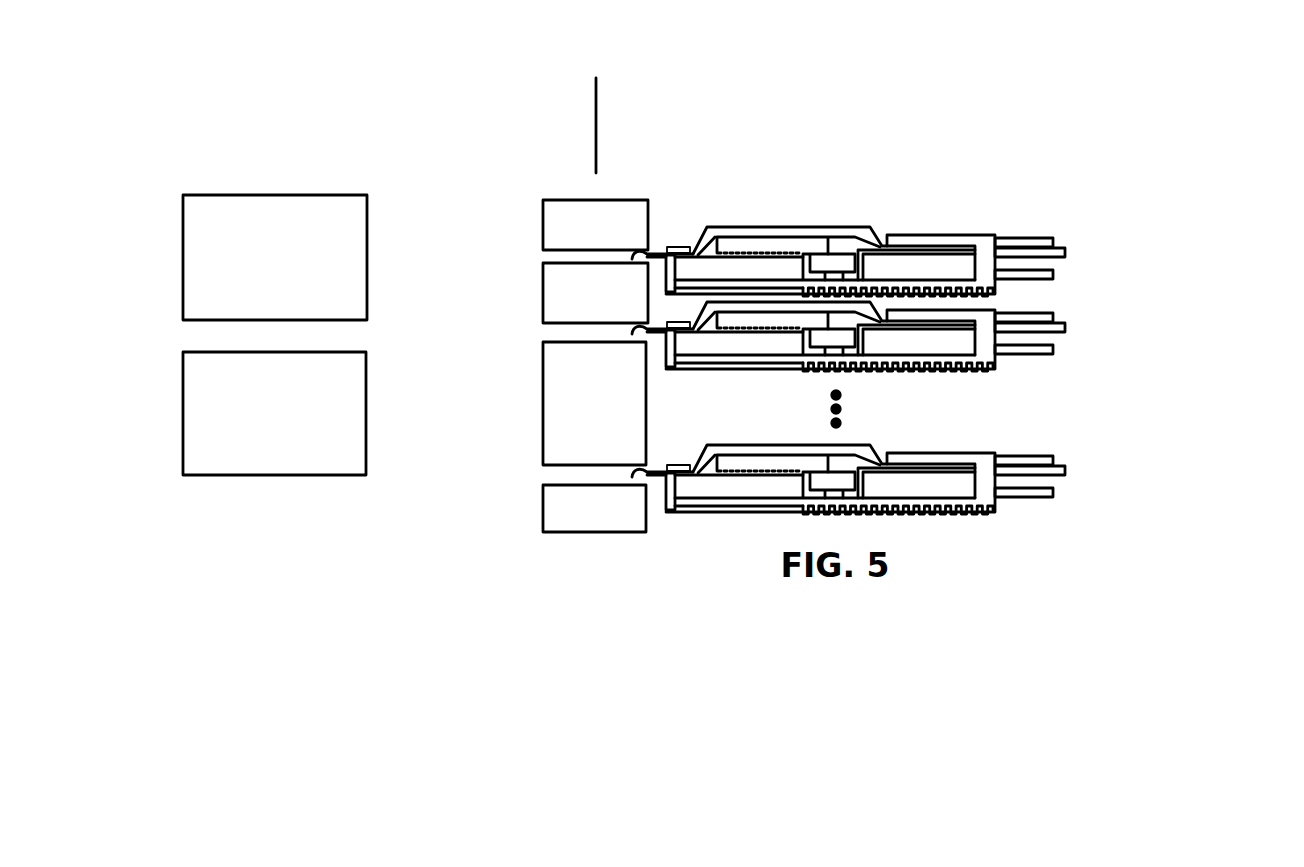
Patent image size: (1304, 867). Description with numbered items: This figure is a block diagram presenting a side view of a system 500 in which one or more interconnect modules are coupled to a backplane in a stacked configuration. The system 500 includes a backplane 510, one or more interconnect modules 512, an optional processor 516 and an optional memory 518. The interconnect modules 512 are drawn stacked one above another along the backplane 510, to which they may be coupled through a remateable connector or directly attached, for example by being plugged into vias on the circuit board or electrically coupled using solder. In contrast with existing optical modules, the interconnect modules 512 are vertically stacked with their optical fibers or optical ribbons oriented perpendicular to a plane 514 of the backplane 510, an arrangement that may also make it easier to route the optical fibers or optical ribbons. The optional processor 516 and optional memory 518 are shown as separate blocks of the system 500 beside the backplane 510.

The system 500 is at (993, 83).
The backplane 510 is at (540, 534).
The interconnect modules 512 is at (1087, 510).
The plane 514 is at (596, 115).
The optional processor 516 is at (275, 257).
The optional memory 518 is at (274, 413).